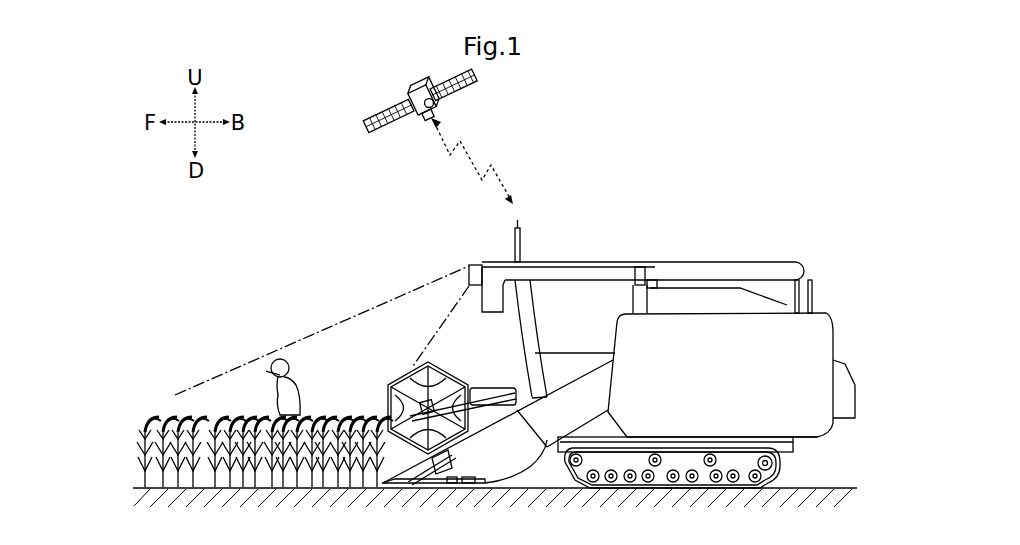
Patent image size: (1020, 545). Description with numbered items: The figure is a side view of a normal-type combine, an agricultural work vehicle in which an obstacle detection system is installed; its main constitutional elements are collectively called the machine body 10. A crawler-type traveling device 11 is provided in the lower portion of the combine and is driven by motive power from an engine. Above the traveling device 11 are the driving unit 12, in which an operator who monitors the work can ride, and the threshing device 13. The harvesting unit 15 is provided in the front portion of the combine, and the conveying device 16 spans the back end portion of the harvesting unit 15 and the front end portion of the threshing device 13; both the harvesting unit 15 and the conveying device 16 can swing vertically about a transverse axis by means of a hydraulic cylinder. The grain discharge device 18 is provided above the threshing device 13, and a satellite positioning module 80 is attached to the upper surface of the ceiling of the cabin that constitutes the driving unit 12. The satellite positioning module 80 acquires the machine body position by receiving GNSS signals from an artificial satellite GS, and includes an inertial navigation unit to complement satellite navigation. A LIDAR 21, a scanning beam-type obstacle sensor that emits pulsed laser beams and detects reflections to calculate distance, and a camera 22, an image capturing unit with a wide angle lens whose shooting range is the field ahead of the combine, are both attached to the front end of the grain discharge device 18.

The machine body 10 is at (669, 226).
The crawler-type traveling device 11 is at (779, 471).
The driving unit 12 is at (541, 318).
The threshing device 13 is at (837, 326).
The harvesting unit 15 is at (500, 463).
The conveying device 16 is at (571, 400).
The grain discharge device 18 is at (722, 270).
The LIDAR 21 is at (466, 251).
The camera 22 is at (476, 265).
The satellite positioning module 80 is at (521, 232).
The artificial satellite GS is at (436, 104).